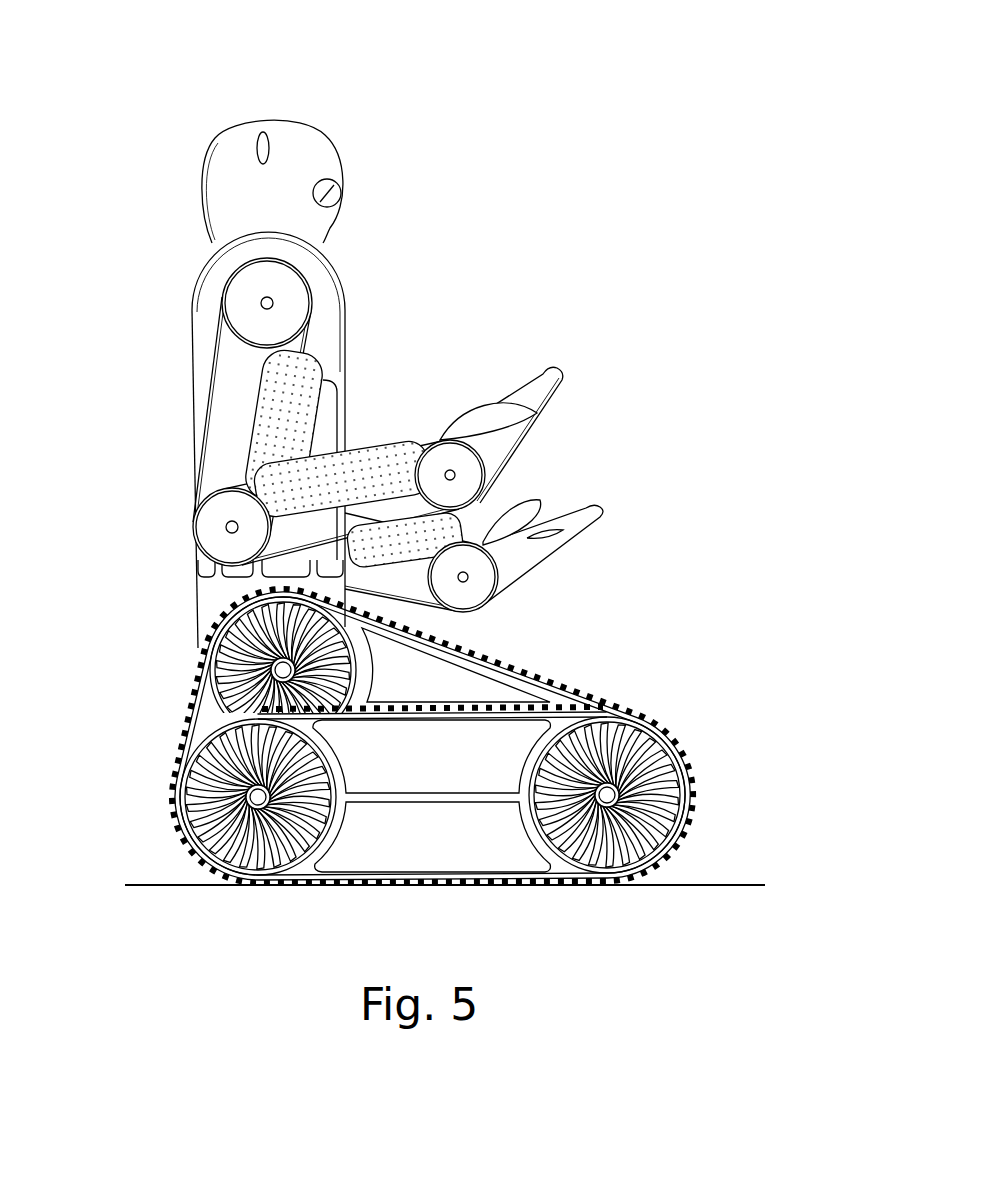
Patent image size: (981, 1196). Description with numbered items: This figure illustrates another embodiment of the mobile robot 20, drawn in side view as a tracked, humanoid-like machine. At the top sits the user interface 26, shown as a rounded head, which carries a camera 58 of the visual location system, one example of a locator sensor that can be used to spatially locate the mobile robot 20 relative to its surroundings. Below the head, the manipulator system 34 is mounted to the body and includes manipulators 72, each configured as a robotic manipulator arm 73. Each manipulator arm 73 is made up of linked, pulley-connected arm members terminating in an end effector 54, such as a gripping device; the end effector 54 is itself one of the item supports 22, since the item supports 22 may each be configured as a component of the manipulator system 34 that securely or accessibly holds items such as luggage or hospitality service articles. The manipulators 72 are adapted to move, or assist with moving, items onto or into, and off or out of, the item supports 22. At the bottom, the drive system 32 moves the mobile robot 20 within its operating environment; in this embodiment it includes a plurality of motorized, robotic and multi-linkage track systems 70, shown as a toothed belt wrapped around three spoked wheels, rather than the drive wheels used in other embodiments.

The mobile robot 20 is at (145, 110).
The user interface 26 is at (350, 168).
The camera 58 is at (333, 203).
The manipulator system 34 is at (422, 365).
The item support 22 is at (577, 482).
The end effector 54 is at (553, 373).
The manipulator 72 is at (387, 451).
The robotic manipulator arm 73 is at (192, 447).
The track system 70 is at (517, 673).
The drive system 32 is at (633, 686).